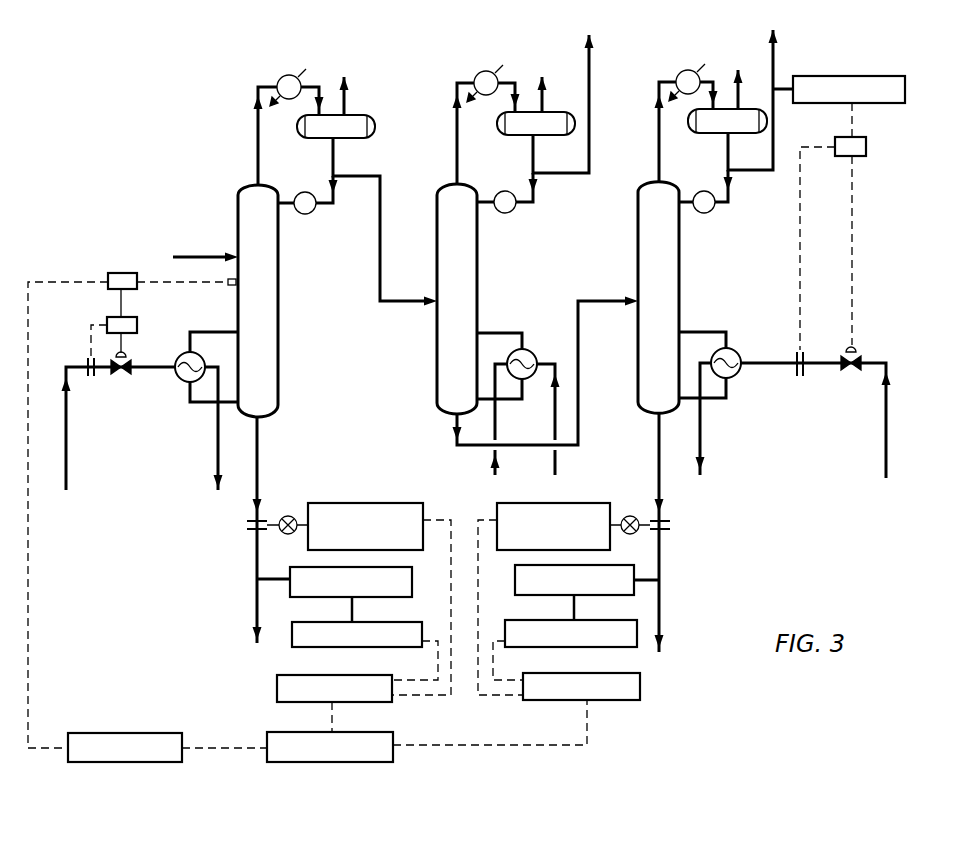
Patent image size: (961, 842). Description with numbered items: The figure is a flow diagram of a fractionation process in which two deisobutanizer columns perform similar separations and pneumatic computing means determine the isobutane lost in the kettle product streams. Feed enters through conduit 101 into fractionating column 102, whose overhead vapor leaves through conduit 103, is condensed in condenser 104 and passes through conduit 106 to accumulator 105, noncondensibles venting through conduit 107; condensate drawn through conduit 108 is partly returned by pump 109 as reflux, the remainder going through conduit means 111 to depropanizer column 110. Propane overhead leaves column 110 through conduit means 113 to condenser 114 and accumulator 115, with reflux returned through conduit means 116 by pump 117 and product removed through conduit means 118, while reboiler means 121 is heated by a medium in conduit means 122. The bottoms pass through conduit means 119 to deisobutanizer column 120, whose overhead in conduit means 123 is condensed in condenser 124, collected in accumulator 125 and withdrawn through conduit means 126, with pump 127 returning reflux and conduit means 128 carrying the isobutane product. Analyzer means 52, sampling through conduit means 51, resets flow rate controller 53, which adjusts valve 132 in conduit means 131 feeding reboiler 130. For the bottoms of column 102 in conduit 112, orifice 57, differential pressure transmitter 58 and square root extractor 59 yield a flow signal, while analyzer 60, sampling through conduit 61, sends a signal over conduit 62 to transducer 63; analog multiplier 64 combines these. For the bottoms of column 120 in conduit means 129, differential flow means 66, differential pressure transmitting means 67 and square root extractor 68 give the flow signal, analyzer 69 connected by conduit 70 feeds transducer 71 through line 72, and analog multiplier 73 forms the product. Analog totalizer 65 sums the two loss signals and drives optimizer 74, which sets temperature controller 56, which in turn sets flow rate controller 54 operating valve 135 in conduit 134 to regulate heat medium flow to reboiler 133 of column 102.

The conduit means 51 is at (785, 89).
The analyzer means 52 is at (905, 91).
The flow rate controller 53 is at (868, 137).
The flow rate controller 54 is at (117, 316).
The temperature controller 56 is at (115, 273).
The orifice 57 is at (247, 523).
The differential pressure transmitter 58 is at (289, 515).
The square root extractor 59 is at (387, 503).
The analyzer 60 is at (307, 567).
The conduit 61 is at (265, 578).
The conduit 62 is at (352, 607).
The transducer 63 is at (367, 647).
The analog multiplier 64 is at (277, 696).
The analog totalizer 65 is at (277, 732).
The differential flow means 66 is at (670, 521).
The differential pressure transmitting means 67 is at (627, 515).
The square root extractor 68 is at (568, 503).
The analyzer 69 is at (618, 565).
The conduit 70 is at (655, 580).
The transducer 71 is at (577, 647).
The line 72 is at (574, 607).
The analog multiplier 73 is at (648, 693).
The optimizer 74 is at (155, 733).
The conduit 101 is at (188, 258).
The fractionating column 102 is at (278, 246).
The conduit 103 is at (258, 165).
The condenser 104 is at (278, 81).
The accumulator 105 is at (350, 138).
The conduit 106 is at (319, 80).
The conduit 107 is at (344, 101).
The conduit 108 is at (330, 185).
The pump 109 is at (313, 211).
The depropanizer column 110 is at (477, 244).
The conduit means 111 is at (380, 246).
The conduit 112 is at (262, 432).
The conduit means 113 is at (457, 151).
The condenser 114 is at (475, 77).
The accumulator 115 is at (521, 135).
The conduit means 116 is at (530, 185).
The pump 117 is at (512, 210).
The conduit means 118 is at (589, 168).
The conduit means 119 is at (545, 446).
The deisobutanizer column 120 is at (679, 242).
The reboiler means 121 is at (537, 350).
The conduit means 122 is at (555, 437).
The conduit means 123 is at (659, 149).
The condenser 124 is at (677, 76).
The accumulator 125 is at (709, 133).
The conduit means 126 is at (730, 196).
The pump 127 is at (712, 210).
The conduit means 128 is at (773, 121).
The conduit means 129 is at (667, 474).
The reboiler 130 is at (742, 350).
The conduit means 131 is at (887, 446).
The valve 132 is at (855, 350).
The reboiler 133 is at (180, 355).
The conduit 134 is at (146, 369).
The valve 135 is at (115, 371).